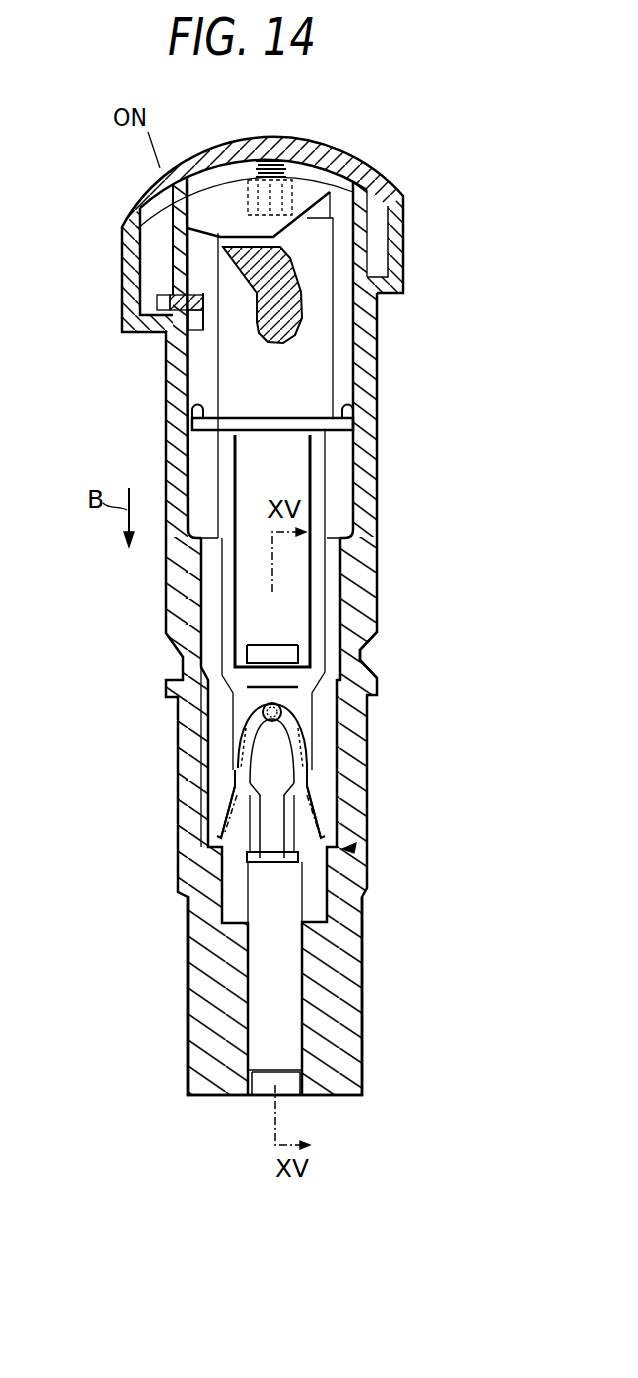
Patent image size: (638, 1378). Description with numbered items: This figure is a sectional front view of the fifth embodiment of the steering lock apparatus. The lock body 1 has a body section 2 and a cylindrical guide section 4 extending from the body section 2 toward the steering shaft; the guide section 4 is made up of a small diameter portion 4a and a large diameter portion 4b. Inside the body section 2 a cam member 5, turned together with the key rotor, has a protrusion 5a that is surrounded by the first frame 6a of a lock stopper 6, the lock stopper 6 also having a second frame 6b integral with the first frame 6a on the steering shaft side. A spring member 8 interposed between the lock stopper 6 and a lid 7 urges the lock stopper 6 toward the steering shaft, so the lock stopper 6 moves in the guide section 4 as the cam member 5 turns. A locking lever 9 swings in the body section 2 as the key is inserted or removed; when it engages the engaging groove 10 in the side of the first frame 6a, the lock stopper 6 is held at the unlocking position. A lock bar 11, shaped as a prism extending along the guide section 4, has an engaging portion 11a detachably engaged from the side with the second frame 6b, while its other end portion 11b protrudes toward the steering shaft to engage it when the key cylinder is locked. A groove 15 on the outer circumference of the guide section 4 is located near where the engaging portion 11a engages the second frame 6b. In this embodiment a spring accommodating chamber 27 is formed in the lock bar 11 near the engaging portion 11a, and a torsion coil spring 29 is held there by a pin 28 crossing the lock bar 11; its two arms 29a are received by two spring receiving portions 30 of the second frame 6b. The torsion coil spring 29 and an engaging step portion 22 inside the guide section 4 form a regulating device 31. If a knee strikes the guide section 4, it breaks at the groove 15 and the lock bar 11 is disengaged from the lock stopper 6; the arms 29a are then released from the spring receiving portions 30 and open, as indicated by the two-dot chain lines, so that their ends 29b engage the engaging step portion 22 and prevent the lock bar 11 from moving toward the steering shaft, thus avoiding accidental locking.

The lock body 1 is at (412, 207).
The body section 2 is at (405, 252).
The guide section 4 is at (378, 518).
The small diameter portion 4a is at (250, 955).
The large diameter portion 4b is at (205, 620).
The cam member 5 is at (302, 330).
The protrusion 5a is at (220, 245).
The lock stopper 6 is at (318, 468).
The first frame 6a is at (345, 386).
The second frame 6b is at (318, 577).
The lid 7 is at (338, 162).
The spring member 8 is at (286, 172).
The locking lever 9 is at (157, 302).
The engaging groove 10 is at (168, 335).
The lock bar 11 is at (296, 906).
The engaging portion 11a is at (300, 665).
The other end portion 11b is at (290, 1080).
The groove 15 is at (380, 648).
The engaging step portion 22 is at (250, 852).
The spring accommodating chamber 27 is at (262, 706).
The pin 28 is at (244, 722).
The torsion coil spring 29 is at (330, 782).
The arms 29a is at (228, 802).
The ends 29b is at (222, 836).
The spring receiving portions 30 is at (242, 738).
The regulating device 31 is at (348, 850).